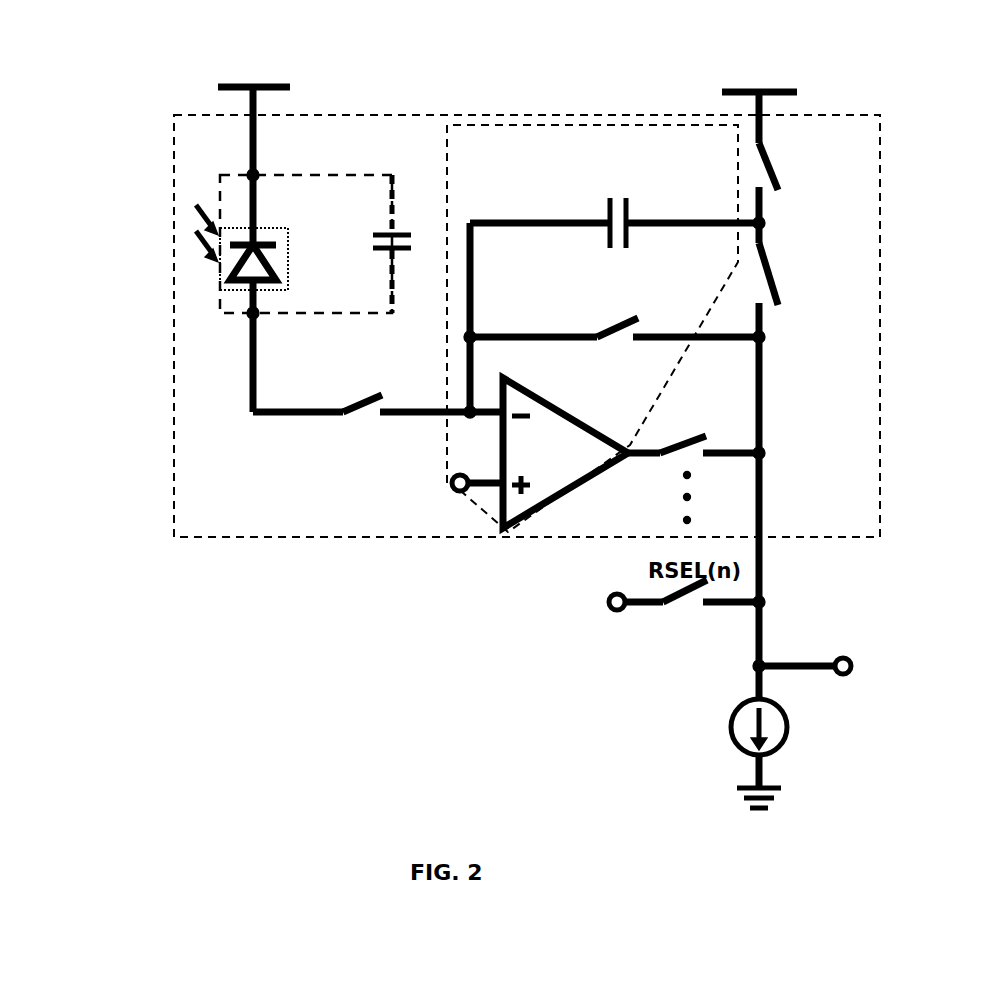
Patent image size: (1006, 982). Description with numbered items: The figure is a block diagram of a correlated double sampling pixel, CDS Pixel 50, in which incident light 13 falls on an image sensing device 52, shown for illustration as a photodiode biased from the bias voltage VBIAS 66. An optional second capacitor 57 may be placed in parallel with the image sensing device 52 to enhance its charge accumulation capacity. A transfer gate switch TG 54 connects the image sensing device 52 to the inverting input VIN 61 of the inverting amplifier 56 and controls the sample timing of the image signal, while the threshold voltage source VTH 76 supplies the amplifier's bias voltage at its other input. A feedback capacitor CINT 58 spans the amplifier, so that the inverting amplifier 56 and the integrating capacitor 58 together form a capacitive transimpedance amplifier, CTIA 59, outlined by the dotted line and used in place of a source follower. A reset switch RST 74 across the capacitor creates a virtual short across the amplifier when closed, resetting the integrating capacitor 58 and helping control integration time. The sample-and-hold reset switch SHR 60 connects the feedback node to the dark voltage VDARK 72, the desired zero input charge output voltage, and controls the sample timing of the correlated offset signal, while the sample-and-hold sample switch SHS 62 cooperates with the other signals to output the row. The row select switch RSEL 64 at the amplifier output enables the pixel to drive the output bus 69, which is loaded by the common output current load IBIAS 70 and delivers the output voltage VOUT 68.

The incident light 13 is at (222, 187).
The CDS Pixel 50 is at (164, 542).
The image sensing device 52 is at (286, 236).
The transfer gate switch 54 is at (328, 372).
The inverting amplifier 56 is at (572, 172).
The optional second capacitor 57 is at (398, 225).
The feedback capacitor 58 is at (543, 425).
The capacitive transimpedance amplifier 59 is at (592, 328).
The sample-and-hold reset switch 60 is at (870, 165).
The inverting input 61 is at (392, 432).
The sample-and-hold sample switch 62 is at (870, 285).
The row select switch 64 is at (676, 405).
The bias voltage 66 is at (268, 144).
The output voltage 68 is at (932, 658).
The output bus 69 is at (760, 636).
The common output current load 70 is at (725, 705).
The dark voltage 72 is at (803, 62).
The reset switch 74 is at (585, 313).
The threshold voltage source 76 is at (362, 478).